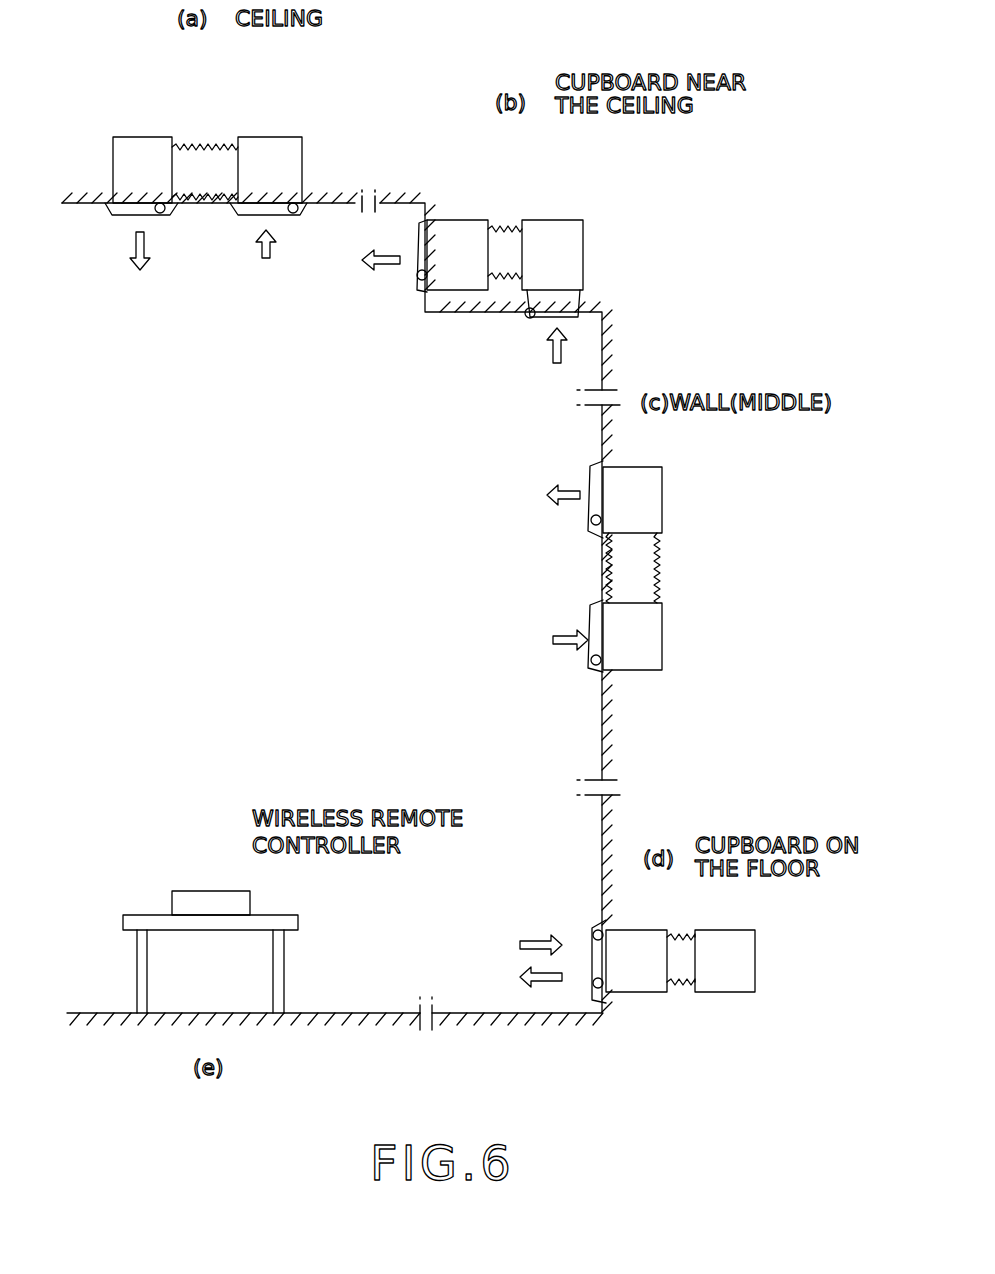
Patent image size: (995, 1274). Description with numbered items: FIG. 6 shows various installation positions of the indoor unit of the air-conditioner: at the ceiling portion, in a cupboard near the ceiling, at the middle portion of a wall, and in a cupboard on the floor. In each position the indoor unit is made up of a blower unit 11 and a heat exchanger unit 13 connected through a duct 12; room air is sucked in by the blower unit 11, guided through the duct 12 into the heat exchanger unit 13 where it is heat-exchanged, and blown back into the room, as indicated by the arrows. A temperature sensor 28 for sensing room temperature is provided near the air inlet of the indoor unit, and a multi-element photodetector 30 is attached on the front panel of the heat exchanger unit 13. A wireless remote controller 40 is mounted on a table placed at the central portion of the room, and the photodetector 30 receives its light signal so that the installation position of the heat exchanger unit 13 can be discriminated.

The blower unit 11 is at (288, 137).
The duct 12 is at (210, 144).
The heat exchanger unit 13 is at (145, 137).
The temperature sensor 28 is at (295, 214).
The multi-element photodetector 30 is at (165, 214).
The wireless remote controller 40 is at (218, 891).